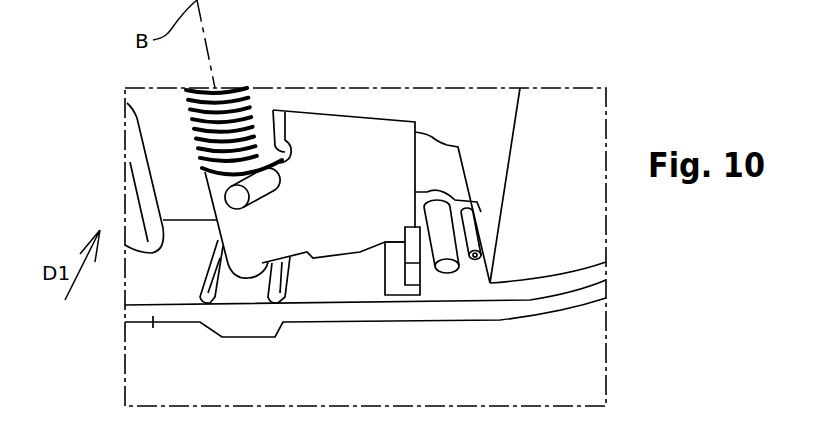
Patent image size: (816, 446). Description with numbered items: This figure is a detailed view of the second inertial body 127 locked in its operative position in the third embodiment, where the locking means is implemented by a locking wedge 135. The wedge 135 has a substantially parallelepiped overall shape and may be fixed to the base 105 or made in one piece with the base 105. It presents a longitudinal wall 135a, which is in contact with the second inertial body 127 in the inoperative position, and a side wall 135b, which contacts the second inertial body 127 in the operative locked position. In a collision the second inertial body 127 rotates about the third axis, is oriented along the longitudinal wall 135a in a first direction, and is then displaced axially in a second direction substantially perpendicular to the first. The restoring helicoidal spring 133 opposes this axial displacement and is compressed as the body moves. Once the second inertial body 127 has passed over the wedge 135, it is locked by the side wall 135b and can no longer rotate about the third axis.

The base 105 is at (147, 325).
The second inertial body 127 is at (382, 140).
The restoring helicoidal spring 133 is at (258, 105).
The locking wedge 135 is at (410, 287).
The longitudinal wall 135a is at (407, 252).
The side wall 135b is at (408, 228).